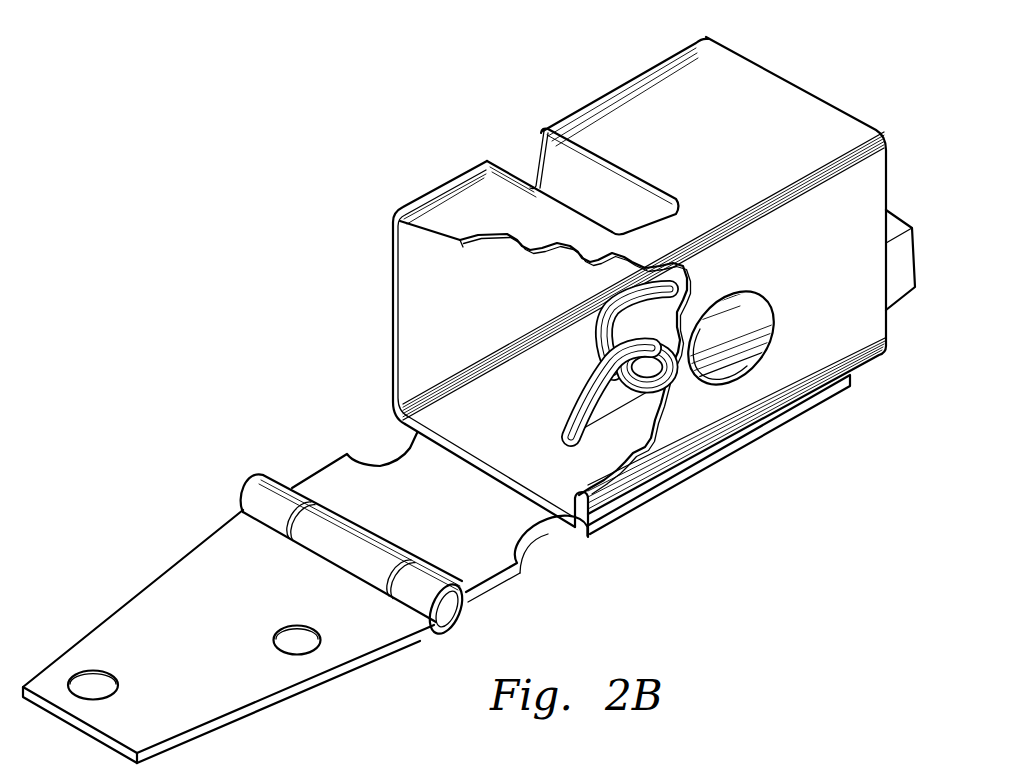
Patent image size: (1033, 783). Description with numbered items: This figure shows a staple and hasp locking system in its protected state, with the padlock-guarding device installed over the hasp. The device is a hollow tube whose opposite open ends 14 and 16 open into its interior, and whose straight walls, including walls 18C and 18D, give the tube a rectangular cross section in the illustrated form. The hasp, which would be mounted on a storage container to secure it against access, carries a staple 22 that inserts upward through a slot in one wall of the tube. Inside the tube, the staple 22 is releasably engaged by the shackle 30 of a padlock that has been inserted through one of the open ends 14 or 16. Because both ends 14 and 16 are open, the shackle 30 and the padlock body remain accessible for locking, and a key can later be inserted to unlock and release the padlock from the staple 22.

The end 14 is at (393, 272).
The end 16 is at (750, 63).
The wall 18C is at (828, 288).
The wall 18D is at (783, 120).
The staple 22 is at (577, 390).
The shackle 30 is at (649, 380).